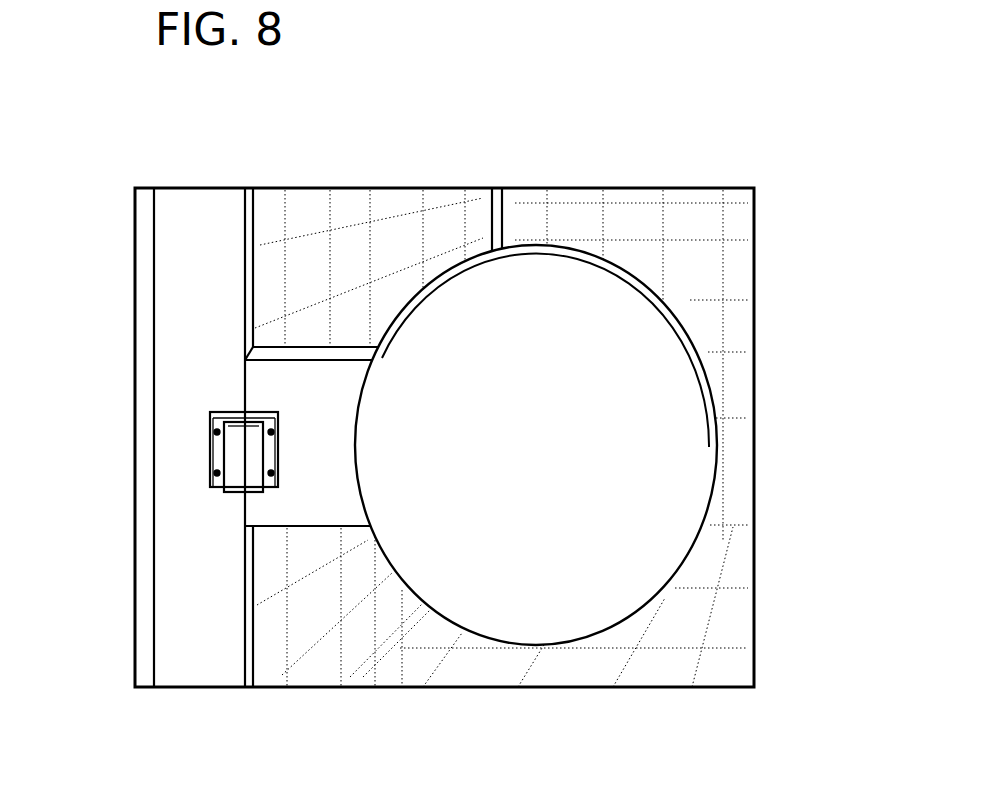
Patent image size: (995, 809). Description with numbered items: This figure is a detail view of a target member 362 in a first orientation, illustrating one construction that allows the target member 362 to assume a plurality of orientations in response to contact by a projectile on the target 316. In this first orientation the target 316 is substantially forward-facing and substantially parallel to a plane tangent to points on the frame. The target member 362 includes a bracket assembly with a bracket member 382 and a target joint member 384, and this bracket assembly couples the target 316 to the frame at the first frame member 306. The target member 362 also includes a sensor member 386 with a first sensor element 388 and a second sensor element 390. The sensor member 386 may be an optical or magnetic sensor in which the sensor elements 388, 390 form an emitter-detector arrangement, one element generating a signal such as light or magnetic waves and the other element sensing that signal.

The first frame member 306 is at (165, 620).
The target 316 is at (560, 627).
The target member 362 is at (782, 298).
The bracket member 382 is at (315, 563).
The target joint member 384 is at (303, 315).
The sensor member 386 is at (127, 475).
The first sensor element 388 is at (233, 480).
The second sensor element 390 is at (256, 484).